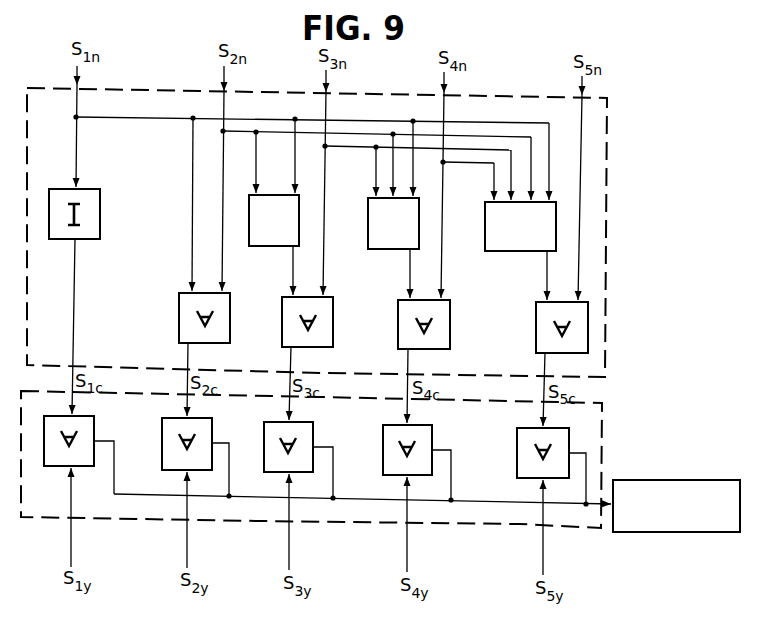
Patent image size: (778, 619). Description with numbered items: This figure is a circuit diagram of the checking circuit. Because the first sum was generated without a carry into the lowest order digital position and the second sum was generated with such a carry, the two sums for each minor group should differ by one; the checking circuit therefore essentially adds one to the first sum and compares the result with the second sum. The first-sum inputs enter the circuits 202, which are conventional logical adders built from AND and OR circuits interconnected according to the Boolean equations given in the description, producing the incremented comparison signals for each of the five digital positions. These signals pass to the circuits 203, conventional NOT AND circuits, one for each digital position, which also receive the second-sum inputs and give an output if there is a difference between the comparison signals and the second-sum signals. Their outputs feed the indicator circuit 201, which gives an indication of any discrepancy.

The indicator circuit 201 is at (689, 480).
The logical adder circuits 202 is at (608, 160).
The NOT AND circuits 203 is at (603, 428).